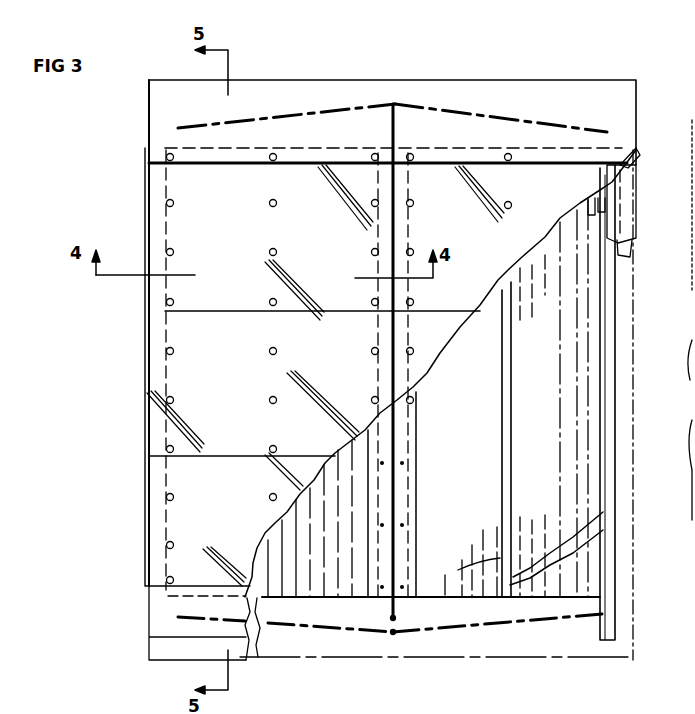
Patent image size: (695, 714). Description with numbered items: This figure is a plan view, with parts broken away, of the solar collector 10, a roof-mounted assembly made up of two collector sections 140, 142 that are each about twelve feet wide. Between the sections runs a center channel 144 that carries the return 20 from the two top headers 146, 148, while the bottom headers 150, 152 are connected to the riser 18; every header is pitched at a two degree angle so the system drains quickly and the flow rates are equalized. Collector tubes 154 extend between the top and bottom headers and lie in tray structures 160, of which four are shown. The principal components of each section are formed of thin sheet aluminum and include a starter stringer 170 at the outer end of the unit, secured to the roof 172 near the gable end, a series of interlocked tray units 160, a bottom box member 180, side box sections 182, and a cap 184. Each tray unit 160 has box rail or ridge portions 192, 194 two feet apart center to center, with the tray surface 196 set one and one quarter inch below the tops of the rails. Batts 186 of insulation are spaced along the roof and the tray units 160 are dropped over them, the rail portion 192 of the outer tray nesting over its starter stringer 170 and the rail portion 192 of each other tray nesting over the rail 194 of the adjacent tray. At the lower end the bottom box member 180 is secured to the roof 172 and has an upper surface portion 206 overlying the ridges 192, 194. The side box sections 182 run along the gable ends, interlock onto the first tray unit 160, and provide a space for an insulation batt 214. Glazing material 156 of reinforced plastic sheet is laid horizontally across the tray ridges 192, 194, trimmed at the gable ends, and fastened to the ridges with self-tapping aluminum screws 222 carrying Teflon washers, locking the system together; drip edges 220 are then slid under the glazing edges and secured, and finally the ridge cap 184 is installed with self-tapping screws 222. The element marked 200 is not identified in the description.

The solar collector 10 is at (128, 126).
The riser 18 is at (392, 634).
The return 20 is at (418, 628).
The collector section 140 is at (206, 143).
The collector section 142 is at (556, 145).
The center channel 144 is at (393, 561).
The top header 146 is at (310, 112).
The top header 148 is at (475, 116).
The bottom header 150 is at (310, 620).
The bottom header 152 is at (540, 622).
The collector tubes 154 is at (600, 208).
The glazing material 156 is at (185, 469).
The tray structures 160 is at (382, 468).
The starter stringer 170 is at (616, 613).
The roof 172 is at (634, 594).
The bottom box member 180 is at (146, 650).
The side box sections 182 is at (638, 212).
The cap 184 is at (630, 95).
The insulation batts 186 is at (553, 552).
The box rail portion 192 is at (464, 570).
The box rail portion 194 is at (415, 522).
The tray surface 196 is at (470, 420).
The adjacent unit 200 is at (694, 598).
The upper surface portion 206 is at (150, 624).
The insulation batt 214 is at (632, 252).
The drip edges 220 is at (146, 513).
The self-tapping aluminum screws 222 is at (168, 201).